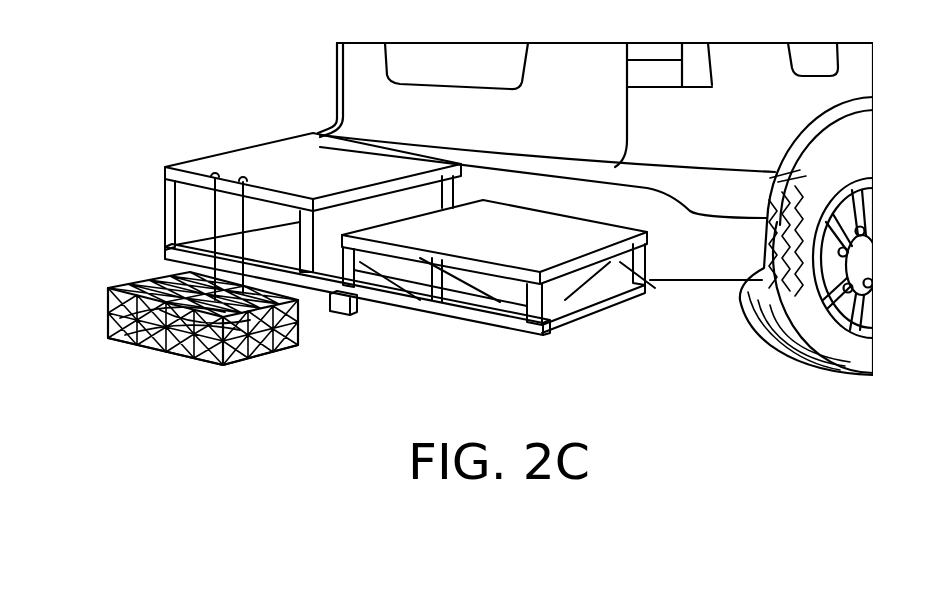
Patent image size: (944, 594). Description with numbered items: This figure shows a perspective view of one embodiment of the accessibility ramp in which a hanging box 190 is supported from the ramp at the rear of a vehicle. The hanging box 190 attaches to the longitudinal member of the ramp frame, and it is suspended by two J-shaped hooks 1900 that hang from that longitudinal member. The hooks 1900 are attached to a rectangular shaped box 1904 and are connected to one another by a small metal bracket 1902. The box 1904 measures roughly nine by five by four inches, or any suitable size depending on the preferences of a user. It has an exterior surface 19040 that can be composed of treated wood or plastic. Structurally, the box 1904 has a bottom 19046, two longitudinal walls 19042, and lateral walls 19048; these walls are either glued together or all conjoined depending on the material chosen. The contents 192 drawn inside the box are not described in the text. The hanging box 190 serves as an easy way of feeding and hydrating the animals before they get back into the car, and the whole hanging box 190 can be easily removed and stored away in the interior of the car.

The hanging box 190 is at (137, 246).
The J-shaped hooks 1900 is at (215, 202).
The small metal bracket 1902 is at (213, 298).
The rectangular shaped box 1904 is at (151, 352).
The exterior surface 19040 is at (108, 300).
The longitudinal walls 19042 is at (182, 353).
The bottom 19046 is at (287, 350).
The lateral walls 19048 is at (300, 320).
The cargo items in crate 192 is at (115, 308).